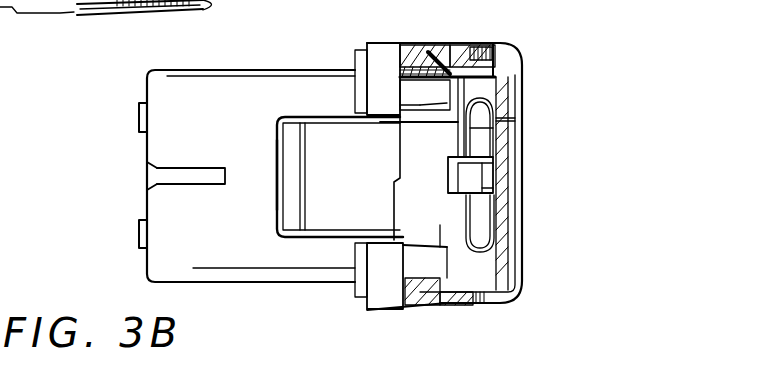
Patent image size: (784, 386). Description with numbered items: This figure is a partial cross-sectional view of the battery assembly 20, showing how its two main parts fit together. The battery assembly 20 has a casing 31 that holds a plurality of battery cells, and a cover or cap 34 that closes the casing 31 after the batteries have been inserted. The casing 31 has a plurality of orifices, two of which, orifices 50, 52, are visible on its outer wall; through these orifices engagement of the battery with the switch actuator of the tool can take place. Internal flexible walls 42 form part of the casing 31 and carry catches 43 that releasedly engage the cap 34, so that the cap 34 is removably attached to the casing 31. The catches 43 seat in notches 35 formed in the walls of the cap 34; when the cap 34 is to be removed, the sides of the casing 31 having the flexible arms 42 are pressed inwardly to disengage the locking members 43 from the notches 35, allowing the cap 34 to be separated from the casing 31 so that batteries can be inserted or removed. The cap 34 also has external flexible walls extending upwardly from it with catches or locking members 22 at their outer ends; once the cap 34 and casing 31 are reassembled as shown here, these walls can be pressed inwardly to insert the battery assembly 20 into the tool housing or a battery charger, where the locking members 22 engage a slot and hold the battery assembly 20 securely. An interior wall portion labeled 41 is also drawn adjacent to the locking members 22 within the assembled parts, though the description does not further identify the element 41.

The battery assembly 20 is at (279, 62).
The catch or locking member 22 is at (288, 207).
The casing 31 is at (207, 90).
The cover or cap 34 is at (490, 43).
The notch 35 is at (432, 47).
The end wall 41 is at (277, 160).
The internal flexible wall 42 is at (408, 57).
The catch or locking member 43 is at (423, 88).
The orifice 50 is at (140, 231).
The orifice 52 is at (140, 111).